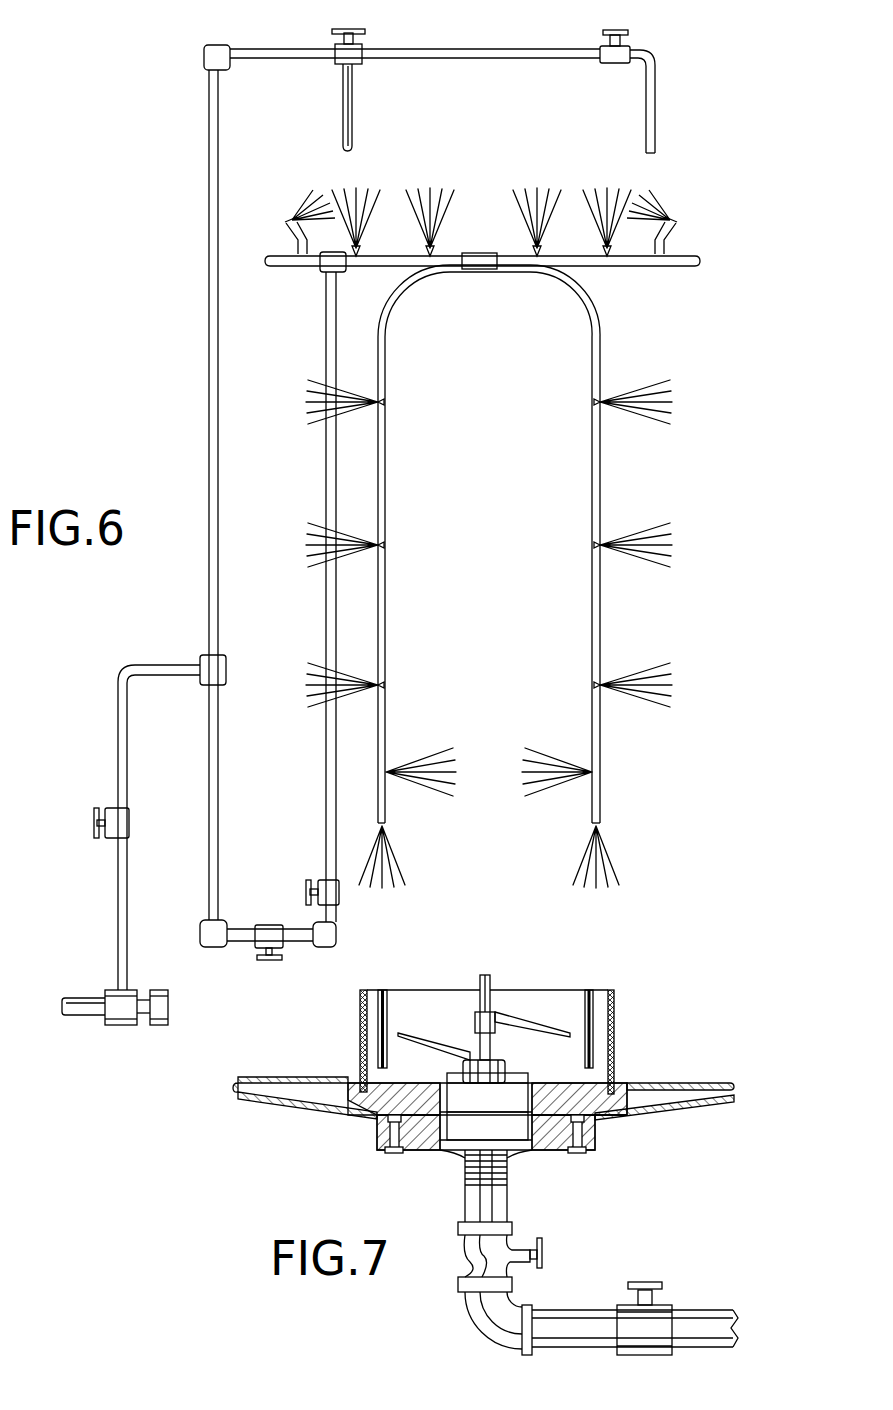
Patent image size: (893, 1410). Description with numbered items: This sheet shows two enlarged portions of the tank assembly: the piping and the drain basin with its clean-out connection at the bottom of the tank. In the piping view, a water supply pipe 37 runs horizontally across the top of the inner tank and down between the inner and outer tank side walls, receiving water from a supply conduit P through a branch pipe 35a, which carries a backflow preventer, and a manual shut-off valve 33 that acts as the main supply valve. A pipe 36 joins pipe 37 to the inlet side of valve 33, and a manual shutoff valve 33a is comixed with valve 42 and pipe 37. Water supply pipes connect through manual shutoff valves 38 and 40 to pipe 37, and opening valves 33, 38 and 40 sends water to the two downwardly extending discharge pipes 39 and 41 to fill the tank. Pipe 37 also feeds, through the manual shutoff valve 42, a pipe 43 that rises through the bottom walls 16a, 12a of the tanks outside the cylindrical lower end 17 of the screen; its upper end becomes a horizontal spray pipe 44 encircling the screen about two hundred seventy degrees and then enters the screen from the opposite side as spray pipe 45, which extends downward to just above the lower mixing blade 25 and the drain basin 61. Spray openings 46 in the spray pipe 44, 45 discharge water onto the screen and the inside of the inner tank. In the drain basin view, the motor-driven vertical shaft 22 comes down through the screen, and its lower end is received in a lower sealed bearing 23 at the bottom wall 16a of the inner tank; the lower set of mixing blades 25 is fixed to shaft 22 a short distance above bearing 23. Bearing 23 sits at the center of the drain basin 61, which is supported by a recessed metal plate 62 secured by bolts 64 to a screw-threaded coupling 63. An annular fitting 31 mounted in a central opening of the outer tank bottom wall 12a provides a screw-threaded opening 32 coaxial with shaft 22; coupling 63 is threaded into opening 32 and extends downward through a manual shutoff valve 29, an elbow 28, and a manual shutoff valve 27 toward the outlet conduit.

In FIG. 6, the water supply pipe 37 is at (492, 59).
In FIG. 6, the manual shutoff valve 38 is at (350, 31).
In FIG. 6, the downwardly extending discharge pipe 39 is at (343, 110).
In FIG. 6, the manual shutoff valve 40 is at (620, 36).
In FIG. 6, the downwardly extending discharge pipe 41 is at (655, 128).
In FIG. 6, the pipe 36 is at (118, 728).
In FIG. 6, the manual shut-off valve 33 is at (95, 828).
In FIG. 6, the branch pipe 35a is at (121, 1026).
In FIG. 6, the supply conduit P is at (70, 999).
In FIG. 7, the supply conduit P is at (700, 1310).
In FIG. 6, the manual shutoff valve 33a is at (265, 961).
In FIG. 6, the pipe 43 is at (326, 770).
In FIG. 6, the manual shutoff valve 42 is at (308, 890).
In FIG. 6, the horizontal spray pipe 44 is at (273, 266).
In FIG. 6, the spray openings 46 is at (362, 257).
In FIG. 6, the spray pipe 45 is at (288, 232).
In FIG. 7, the spray pipe 45 is at (387, 1045).
In FIG. 7, the cylindrical lower end of the screen 17 is at (360, 1018).
In FIG. 7, the vertical shaft 22 is at (491, 982).
In FIG. 7, the lower set of mixing blades 25 is at (458, 1040).
In FIG. 7, the lower sealed bearing 23 is at (505, 1064).
In FIG. 7, the recessed metal plate 62 is at (538, 1084).
In FIG. 7, the drain basin 61 is at (498, 1140).
In FIG. 7, the bolts 64 is at (392, 1155).
In FIG. 7, the screw-threaded coupling 63 is at (378, 1106).
In FIG. 7, the bottom wall of the inner tank 16a is at (668, 1083).
In FIG. 7, the bottom wall of the outer tank 12a is at (696, 1103).
In FIG. 7, the annular fitting 31 is at (465, 1205).
In FIG. 7, the screw-threaded opening 32 is at (505, 1172).
In FIG. 7, the manual shutoff valve 29 is at (543, 1252).
In FIG. 7, the elbow 28 is at (478, 1318).
In FIG. 7, the manual shutoff valve 27 is at (646, 1282).